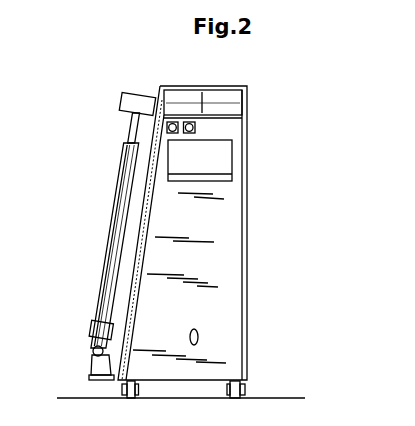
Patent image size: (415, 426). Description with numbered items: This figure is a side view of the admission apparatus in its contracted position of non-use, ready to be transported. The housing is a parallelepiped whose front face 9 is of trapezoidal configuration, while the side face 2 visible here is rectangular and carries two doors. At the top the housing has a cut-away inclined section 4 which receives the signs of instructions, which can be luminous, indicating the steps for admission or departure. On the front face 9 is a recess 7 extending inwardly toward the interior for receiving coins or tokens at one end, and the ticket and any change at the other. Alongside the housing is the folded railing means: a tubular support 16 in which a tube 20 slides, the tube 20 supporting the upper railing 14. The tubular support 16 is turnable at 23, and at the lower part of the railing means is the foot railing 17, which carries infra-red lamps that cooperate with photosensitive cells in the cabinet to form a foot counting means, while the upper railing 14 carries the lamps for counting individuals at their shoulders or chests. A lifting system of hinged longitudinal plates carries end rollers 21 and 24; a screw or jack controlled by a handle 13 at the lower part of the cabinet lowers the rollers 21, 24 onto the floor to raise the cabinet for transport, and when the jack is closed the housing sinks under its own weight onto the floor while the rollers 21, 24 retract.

The side face 2 is at (247, 205).
The cut-away inclined section 4 is at (238, 107).
The recess 7 is at (212, 166).
The front face 9 is at (215, 256).
The handle 13 is at (199, 338).
The upper railing 14 is at (124, 101).
The tubular support 16 is at (110, 238).
The foot railing 17 is at (92, 327).
The tube 20 is at (128, 132).
The end roller 21 is at (244, 388).
The turning point 23 is at (96, 353).
The end roller 24 is at (122, 388).